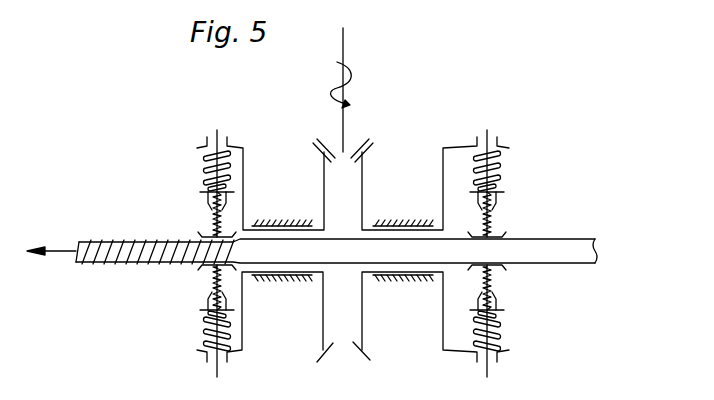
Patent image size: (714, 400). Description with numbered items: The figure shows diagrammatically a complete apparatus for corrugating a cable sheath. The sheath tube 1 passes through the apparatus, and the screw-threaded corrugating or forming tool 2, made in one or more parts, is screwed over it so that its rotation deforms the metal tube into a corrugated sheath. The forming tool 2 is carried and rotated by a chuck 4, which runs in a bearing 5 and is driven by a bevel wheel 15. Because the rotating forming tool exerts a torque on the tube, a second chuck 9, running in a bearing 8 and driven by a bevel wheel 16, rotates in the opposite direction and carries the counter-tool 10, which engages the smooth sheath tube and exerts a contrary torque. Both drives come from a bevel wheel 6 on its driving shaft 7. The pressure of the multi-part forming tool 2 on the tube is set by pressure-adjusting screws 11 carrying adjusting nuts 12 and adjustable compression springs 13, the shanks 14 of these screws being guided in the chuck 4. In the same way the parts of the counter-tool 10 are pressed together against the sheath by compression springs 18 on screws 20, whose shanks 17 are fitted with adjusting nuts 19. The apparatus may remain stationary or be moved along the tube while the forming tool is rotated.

The sheath tube 1 is at (100, 243).
The corrugating or forming tool 2 is at (212, 234).
The chuck 4 is at (236, 146).
The bearing 5 is at (280, 224).
The bevel wheel 6 is at (327, 146).
The driving shaft 7 is at (346, 50).
The bearing 8 is at (401, 224).
The chuck 9 is at (453, 147).
The counter-tool 10 is at (498, 233).
The pressure-adjusting screws 11 is at (212, 275).
The adjusting nuts 12 is at (208, 303).
The adjustable compression springs 13 is at (208, 338).
The shanks of the adjusting screws 14 is at (213, 374).
The bevel wheel 15 is at (322, 326).
The bevel wheel 16 is at (362, 321).
The shanks of screws 17 is at (490, 370).
The compression springs 18 is at (496, 340).
The adjusting nuts 19 is at (497, 301).
The screws 20 is at (490, 279).